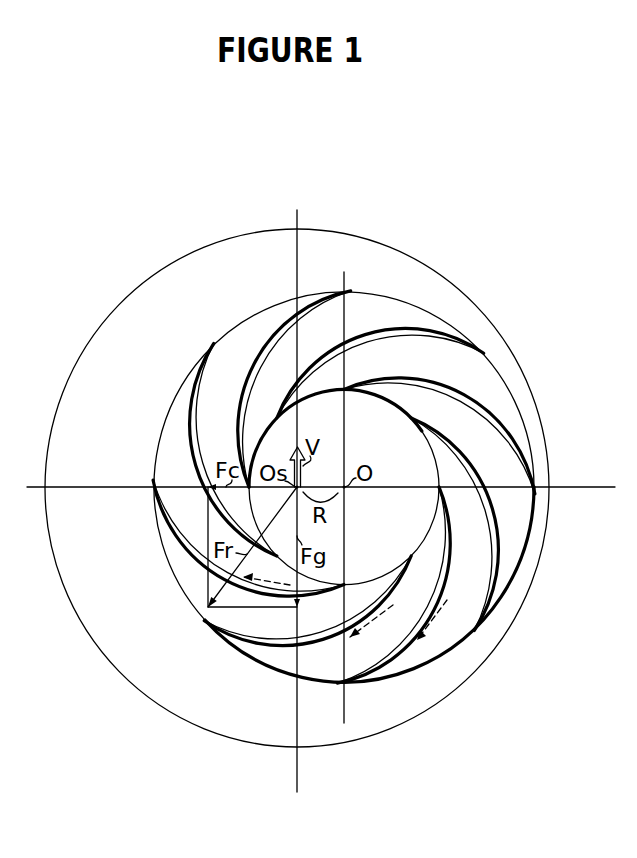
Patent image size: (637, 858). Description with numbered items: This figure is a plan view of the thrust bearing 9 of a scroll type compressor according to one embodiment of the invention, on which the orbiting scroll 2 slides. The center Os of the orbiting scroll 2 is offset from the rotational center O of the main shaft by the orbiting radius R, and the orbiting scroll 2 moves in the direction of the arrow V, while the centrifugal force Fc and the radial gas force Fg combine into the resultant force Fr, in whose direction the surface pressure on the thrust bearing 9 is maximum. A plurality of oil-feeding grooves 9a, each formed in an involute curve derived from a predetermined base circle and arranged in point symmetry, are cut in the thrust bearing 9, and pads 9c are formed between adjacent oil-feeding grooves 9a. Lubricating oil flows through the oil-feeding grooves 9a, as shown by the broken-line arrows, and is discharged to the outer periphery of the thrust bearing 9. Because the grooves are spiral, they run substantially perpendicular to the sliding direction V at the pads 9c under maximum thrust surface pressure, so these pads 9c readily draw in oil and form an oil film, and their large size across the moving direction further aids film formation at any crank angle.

The orbiting scroll 2 is at (538, 583).
The thrust bearing 9 is at (344, 489).
The oil-feeding grooves 9a is at (381, 663).
The pads 9c is at (257, 628).